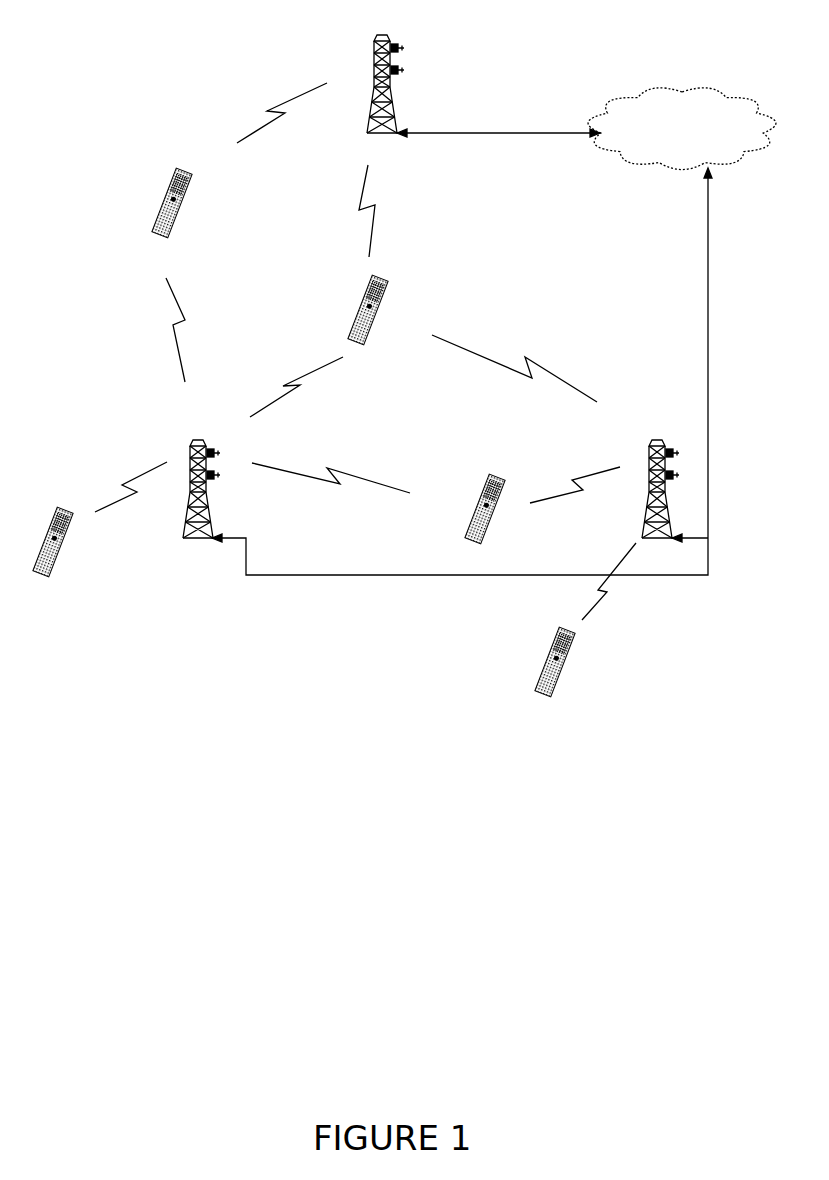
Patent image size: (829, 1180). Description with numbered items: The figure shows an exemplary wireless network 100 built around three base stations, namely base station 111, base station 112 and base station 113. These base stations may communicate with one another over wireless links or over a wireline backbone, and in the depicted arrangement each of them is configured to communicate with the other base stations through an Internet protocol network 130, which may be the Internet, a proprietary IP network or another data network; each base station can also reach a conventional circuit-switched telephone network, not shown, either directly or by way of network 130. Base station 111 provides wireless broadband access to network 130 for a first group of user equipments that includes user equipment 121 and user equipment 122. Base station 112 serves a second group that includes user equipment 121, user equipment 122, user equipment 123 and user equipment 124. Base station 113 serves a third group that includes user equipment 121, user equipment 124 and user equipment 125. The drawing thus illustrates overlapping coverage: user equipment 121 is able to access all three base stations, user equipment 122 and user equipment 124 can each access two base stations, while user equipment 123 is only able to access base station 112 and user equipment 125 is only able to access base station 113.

The wireless network 100 is at (240, 808).
The base station 111 is at (385, 33).
The base station 112 is at (198, 440).
The base station 113 is at (657, 440).
The user equipment 121 is at (380, 313).
The user equipment 122 is at (185, 203).
The user equipment 123 is at (65, 540).
The user equipment 124 is at (482, 485).
The user equipment 125 is at (540, 683).
The Internet protocol (IP) network 130 is at (690, 92).